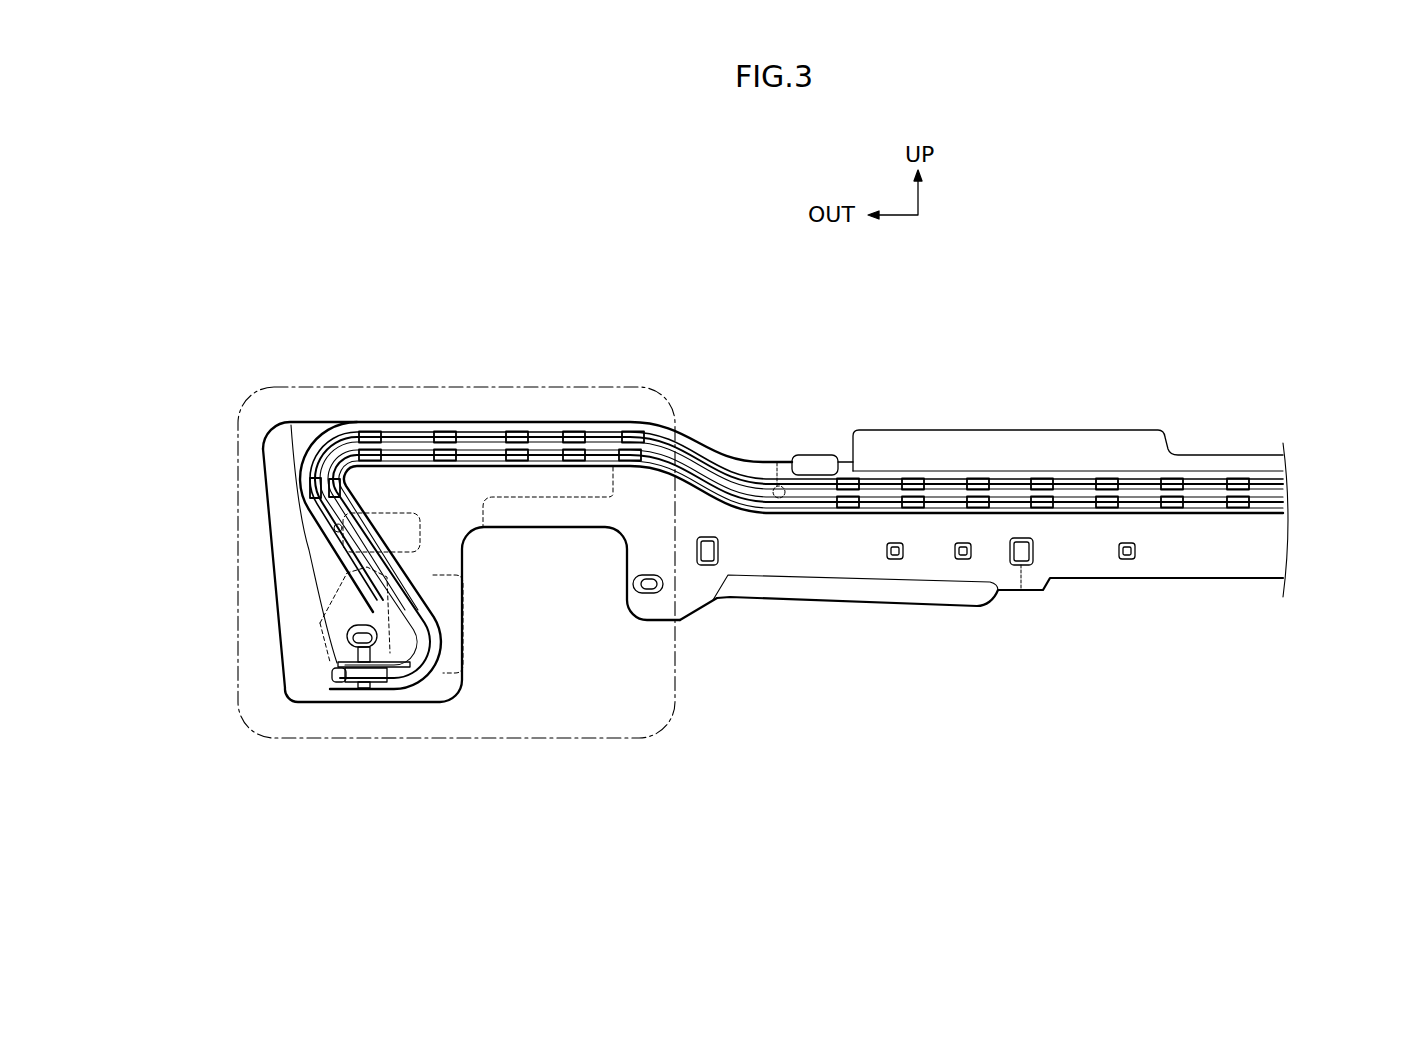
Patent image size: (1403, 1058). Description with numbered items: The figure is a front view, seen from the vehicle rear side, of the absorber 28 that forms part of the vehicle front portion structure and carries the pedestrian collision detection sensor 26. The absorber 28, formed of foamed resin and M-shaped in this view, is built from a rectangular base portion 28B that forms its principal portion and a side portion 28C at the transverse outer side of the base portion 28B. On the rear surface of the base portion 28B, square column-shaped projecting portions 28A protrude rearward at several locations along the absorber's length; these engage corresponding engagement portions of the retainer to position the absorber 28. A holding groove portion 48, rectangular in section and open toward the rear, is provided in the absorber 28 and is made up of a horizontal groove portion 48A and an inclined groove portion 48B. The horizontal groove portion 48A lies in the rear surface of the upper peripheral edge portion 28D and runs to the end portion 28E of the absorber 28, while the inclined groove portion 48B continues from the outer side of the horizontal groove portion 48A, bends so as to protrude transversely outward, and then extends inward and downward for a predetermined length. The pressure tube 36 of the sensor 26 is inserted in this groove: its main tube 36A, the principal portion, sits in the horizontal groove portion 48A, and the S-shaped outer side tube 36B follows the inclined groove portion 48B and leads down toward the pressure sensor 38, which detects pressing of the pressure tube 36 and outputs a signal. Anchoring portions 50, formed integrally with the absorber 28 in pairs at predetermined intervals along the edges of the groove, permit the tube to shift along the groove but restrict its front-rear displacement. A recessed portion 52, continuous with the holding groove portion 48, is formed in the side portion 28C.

The absorber 28 is at (1097, 411).
The projecting portions 28A is at (1021, 589).
The base portion 28B is at (1257, 546).
The side portions 28C is at (298, 622).
The peripheral edge portion 28D is at (1255, 476).
The end portion 28E is at (290, 420).
The pedestrian collision detection sensor 26 is at (856, 559).
The pressure tube 36 is at (856, 506).
The main tube 36A is at (1143, 488).
The outer side tube 36B is at (414, 606).
The pressure sensor 38 is at (377, 684).
The holding groove portion 48 is at (598, 472).
The horizontal groove portion 48A is at (777, 486).
The inclined groove portion 48B is at (342, 524).
The anchoring portions 50 is at (518, 432).
The recessed portion 52 is at (413, 582).